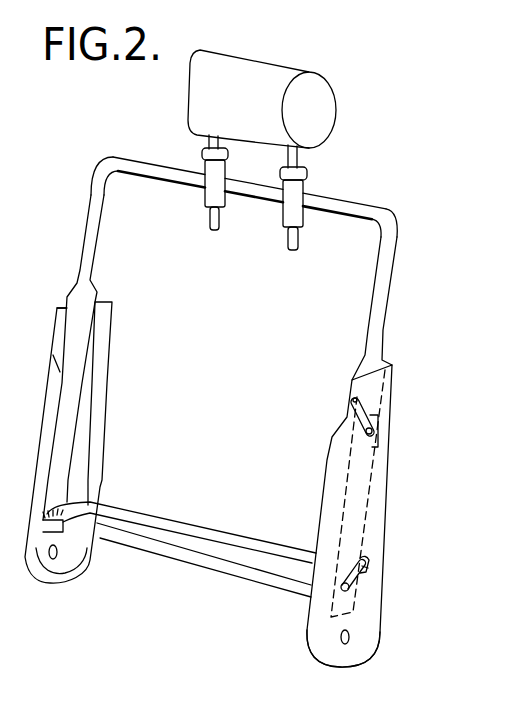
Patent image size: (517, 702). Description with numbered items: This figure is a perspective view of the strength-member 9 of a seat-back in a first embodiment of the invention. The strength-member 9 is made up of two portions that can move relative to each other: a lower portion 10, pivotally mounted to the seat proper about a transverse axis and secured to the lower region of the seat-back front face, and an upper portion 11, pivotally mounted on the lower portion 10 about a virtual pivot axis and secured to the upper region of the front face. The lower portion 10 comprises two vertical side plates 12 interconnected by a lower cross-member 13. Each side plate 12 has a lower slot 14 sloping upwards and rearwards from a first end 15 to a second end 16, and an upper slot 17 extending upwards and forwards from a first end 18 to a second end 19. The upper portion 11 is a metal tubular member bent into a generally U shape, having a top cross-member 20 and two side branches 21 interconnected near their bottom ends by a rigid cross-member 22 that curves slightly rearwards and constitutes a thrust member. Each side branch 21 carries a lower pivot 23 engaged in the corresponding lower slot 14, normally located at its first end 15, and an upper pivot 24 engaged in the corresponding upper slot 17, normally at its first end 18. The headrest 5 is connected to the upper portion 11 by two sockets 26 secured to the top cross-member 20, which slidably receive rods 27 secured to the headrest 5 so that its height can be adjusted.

The headrest 5 is at (313, 113).
The strength-member 9 is at (63, 298).
The lower portion 10 is at (388, 612).
The upper portion 11 is at (400, 218).
The side plate 12 is at (98, 427).
The lower cross-member 13 is at (152, 547).
The lower slot 14 is at (367, 571).
The first end 15 is at (341, 589).
The second end 16 is at (369, 560).
The upper slot 17 is at (370, 418).
The first end 18 is at (379, 448).
The second end 19 is at (354, 399).
The top cross-member 20 is at (374, 215).
The side branch 21 is at (88, 245).
The rigid cross-member 22 is at (217, 528).
The lower pivot 23 is at (342, 583).
The upper pivot 24 is at (366, 433).
The socket 26 is at (214, 183).
The rod 27 is at (210, 139).